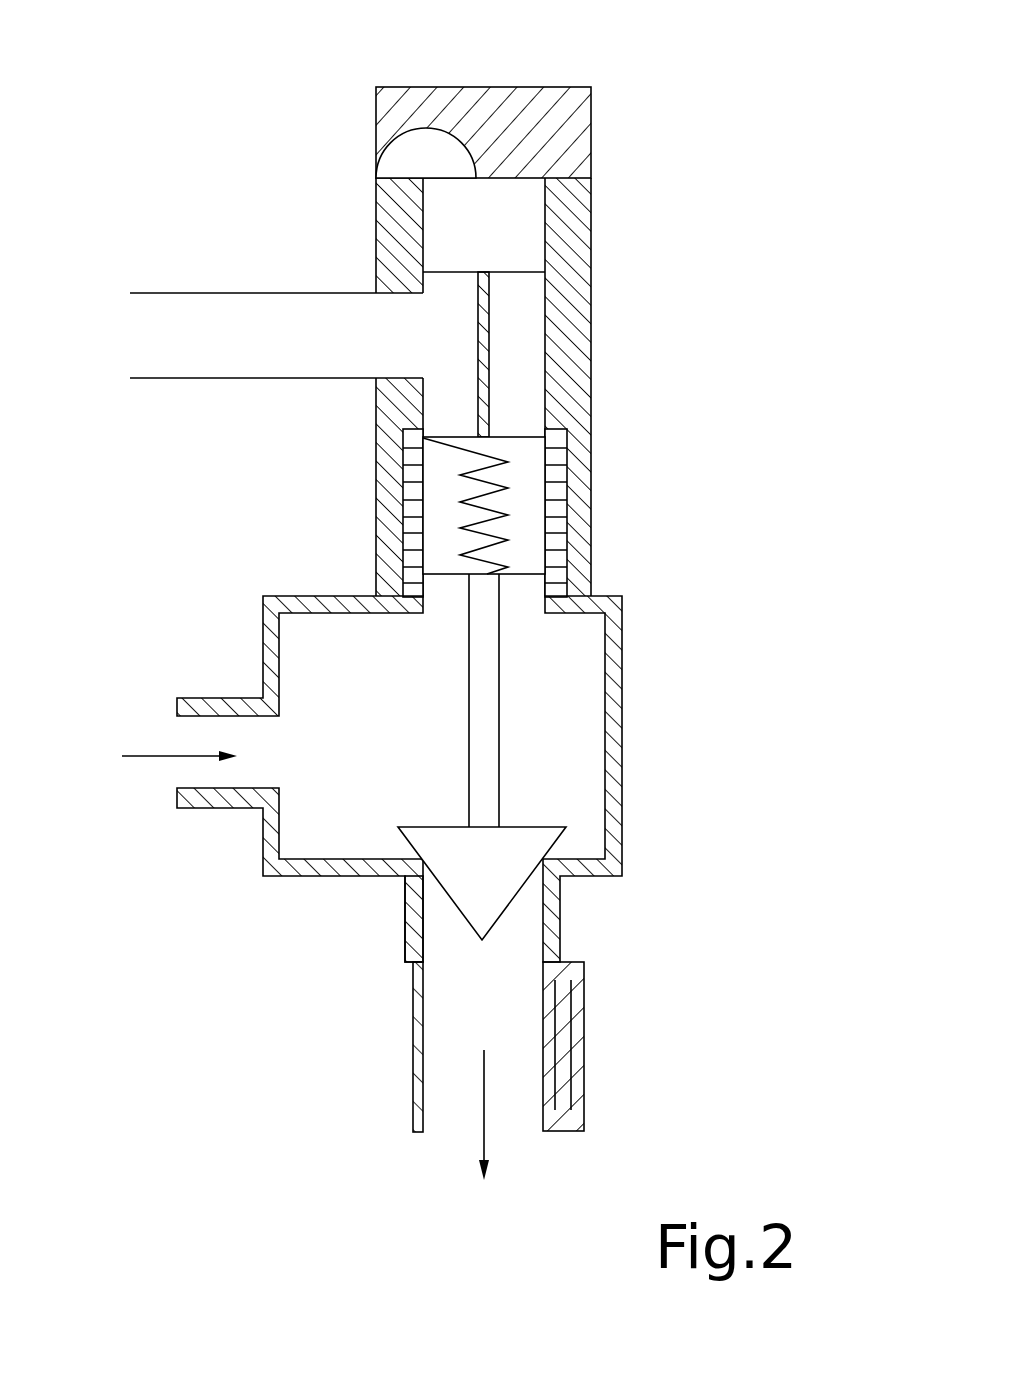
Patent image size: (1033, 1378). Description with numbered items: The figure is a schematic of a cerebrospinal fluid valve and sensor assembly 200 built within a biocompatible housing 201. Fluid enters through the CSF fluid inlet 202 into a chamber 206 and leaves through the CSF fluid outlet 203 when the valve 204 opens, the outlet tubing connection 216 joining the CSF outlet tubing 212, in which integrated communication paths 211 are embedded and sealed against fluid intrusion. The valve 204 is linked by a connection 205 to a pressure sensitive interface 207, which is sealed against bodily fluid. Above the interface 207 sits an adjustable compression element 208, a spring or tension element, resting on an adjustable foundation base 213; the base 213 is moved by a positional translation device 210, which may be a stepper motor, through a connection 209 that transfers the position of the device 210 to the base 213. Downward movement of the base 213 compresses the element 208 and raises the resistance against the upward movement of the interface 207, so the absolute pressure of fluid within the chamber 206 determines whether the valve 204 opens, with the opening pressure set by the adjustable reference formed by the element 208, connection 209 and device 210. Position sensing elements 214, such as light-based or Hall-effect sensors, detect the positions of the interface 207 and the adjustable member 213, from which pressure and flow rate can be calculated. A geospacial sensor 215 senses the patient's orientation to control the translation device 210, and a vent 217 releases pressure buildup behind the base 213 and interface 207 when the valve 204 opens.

The valve and sensor assembly 200 is at (203, 1028).
The biocompatible housing 201 is at (591, 198).
The CSF fluid inlet 202 is at (178, 770).
The CSF fluid outlet 203 is at (448, 1105).
The valve 204 is at (484, 907).
The connection 205 is at (483, 757).
The chamber 206 is at (590, 647).
The pressure sensitive interface 207 is at (548, 565).
The adjustable compression element 208 is at (500, 478).
The connection 209 is at (490, 357).
The positional translation device 210 is at (517, 193).
The integrated communication paths 211 is at (582, 995).
The CSF outlet tubing 212 is at (577, 1106).
The adjustable foundation base 213 is at (423, 437).
The position sensing elements 214 is at (410, 500).
The geospacial sensor 215 is at (405, 157).
The outlet tubing connection 216 is at (407, 966).
The vent 217 is at (153, 378).